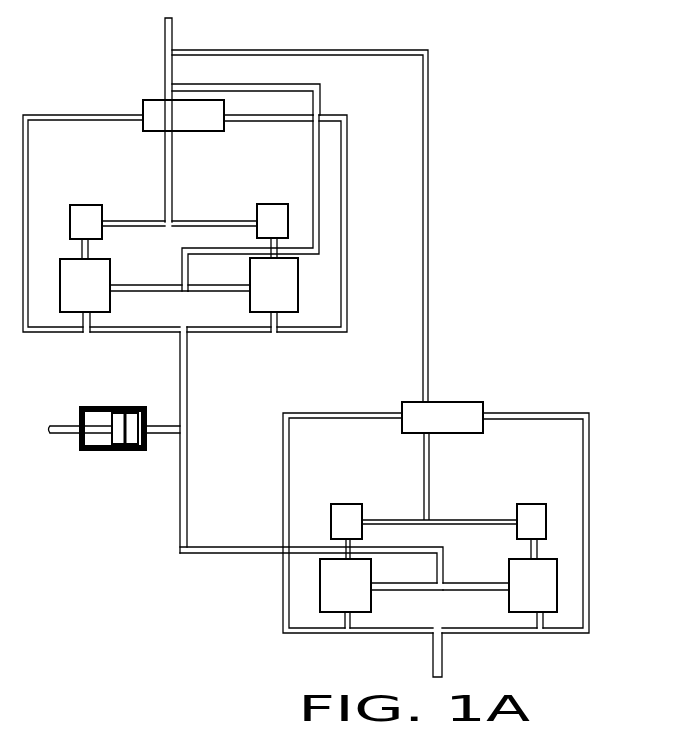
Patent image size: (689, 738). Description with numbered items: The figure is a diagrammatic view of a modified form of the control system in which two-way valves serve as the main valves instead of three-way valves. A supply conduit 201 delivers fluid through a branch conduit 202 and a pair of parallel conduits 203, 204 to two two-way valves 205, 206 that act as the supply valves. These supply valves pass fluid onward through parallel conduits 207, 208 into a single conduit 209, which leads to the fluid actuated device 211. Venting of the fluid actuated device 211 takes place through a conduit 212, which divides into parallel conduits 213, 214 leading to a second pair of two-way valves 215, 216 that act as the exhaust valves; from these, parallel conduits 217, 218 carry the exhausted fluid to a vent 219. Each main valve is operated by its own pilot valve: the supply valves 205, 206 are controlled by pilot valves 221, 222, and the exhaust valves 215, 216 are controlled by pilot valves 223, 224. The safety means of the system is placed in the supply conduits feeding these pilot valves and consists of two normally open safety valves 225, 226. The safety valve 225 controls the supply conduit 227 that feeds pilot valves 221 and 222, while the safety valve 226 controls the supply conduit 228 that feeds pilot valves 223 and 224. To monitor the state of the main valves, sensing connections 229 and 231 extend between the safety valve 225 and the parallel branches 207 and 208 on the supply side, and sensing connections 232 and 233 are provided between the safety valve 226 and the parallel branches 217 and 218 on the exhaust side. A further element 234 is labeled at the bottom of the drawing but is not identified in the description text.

The supply conduit 201 is at (162, 33).
The branch conduit 202 is at (312, 168).
The parallel conduit 203 is at (135, 291).
The parallel conduit 204 is at (207, 290).
The two-way valve 205 is at (110, 268).
The two-way valve 206 is at (286, 286).
The parallel conduit 207 is at (148, 336).
The parallel conduit 208 is at (238, 334).
The conduit 209 is at (188, 390).
The fluid actuated device 211 is at (128, 452).
The conduit 212 is at (230, 550).
The parallel conduit 213 is at (420, 585).
The parallel conduit 214 is at (475, 585).
The two-way valve 215 is at (328, 571).
The two-way valve 216 is at (508, 565).
The parallel conduit 217 is at (344, 616).
The parallel conduit 218 is at (543, 617).
The vent 219 is at (442, 660).
The pilot valve 221 is at (91, 205).
The pilot valve 222 is at (257, 212).
The pilot valve 223 is at (350, 502).
The pilot valve 224 is at (538, 490).
The safety valve 225 is at (215, 125).
The safety valve 226 is at (483, 400).
The supply conduit 227 is at (172, 165).
The supply conduit 228 is at (430, 460).
The sensing connection 229 is at (29, 156).
The sensing connection 231 is at (348, 228).
The sensing connection 232 is at (283, 608).
The sensing connection 233 is at (590, 541).
The line 234 is at (225, 737).